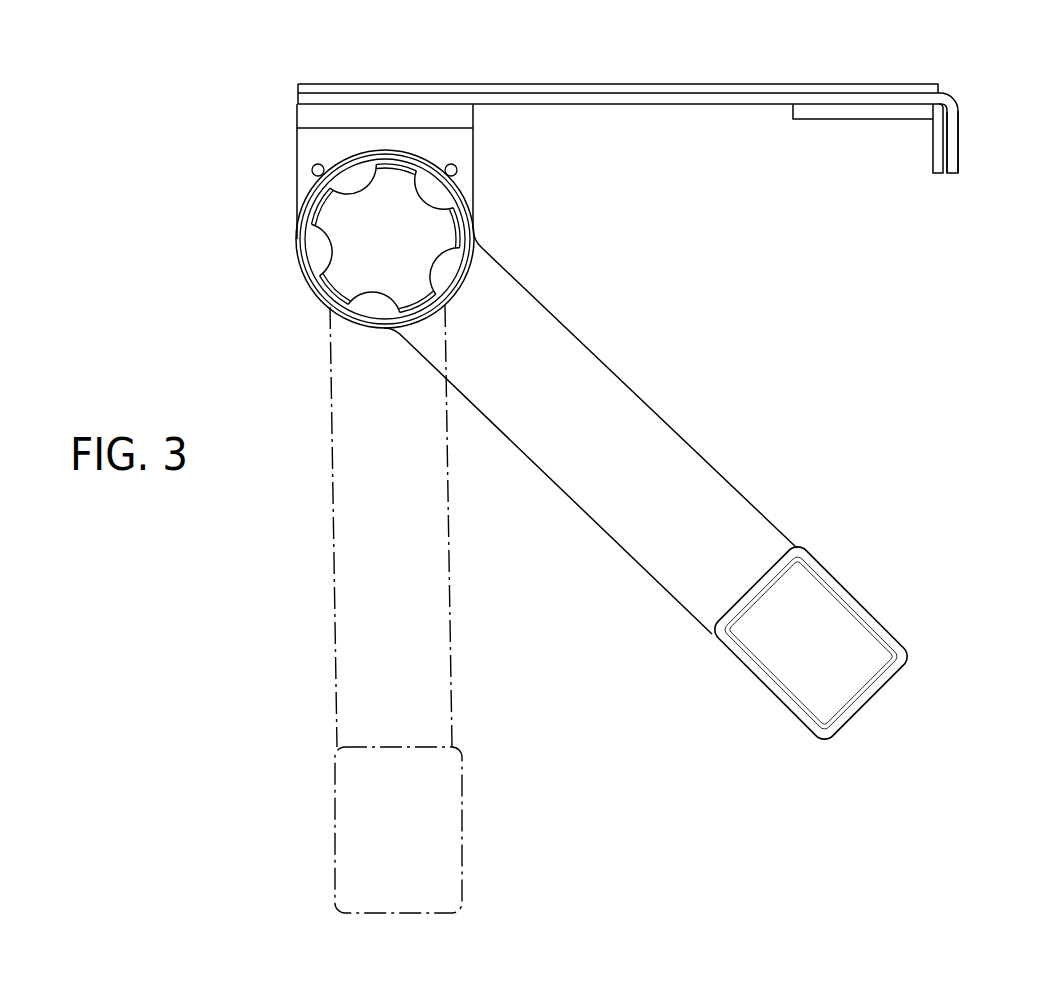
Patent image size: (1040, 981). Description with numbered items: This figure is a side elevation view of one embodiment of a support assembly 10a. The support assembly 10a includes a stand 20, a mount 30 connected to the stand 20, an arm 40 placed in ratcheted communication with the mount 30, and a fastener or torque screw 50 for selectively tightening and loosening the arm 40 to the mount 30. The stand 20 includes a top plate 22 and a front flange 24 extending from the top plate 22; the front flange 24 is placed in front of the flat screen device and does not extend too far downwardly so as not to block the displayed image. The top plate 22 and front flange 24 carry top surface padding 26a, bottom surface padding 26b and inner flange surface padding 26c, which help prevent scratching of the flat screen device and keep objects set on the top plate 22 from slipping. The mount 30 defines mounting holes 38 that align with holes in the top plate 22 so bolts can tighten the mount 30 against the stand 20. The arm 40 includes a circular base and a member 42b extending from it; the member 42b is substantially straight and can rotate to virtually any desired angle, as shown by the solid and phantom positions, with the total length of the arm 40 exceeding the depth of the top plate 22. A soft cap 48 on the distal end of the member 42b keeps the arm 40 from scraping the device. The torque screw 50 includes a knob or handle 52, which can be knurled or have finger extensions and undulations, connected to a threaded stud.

The support assembly 10a is at (990, 342).
The stand 20 is at (953, 98).
The top plate 22 is at (298, 100).
The front flange 24 is at (958, 143).
The top surface padding 26a is at (662, 84).
The bottom surface padding 26b is at (818, 120).
The inner flange surface padding 26c is at (932, 155).
The mount 30 is at (297, 118).
The mounting holes 38 is at (312, 169).
The arm 40 is at (578, 338).
The member 42b is at (627, 457).
The soft cap 48 is at (772, 683).
The torque screw 50 is at (318, 287).
The handle 52 is at (368, 238).